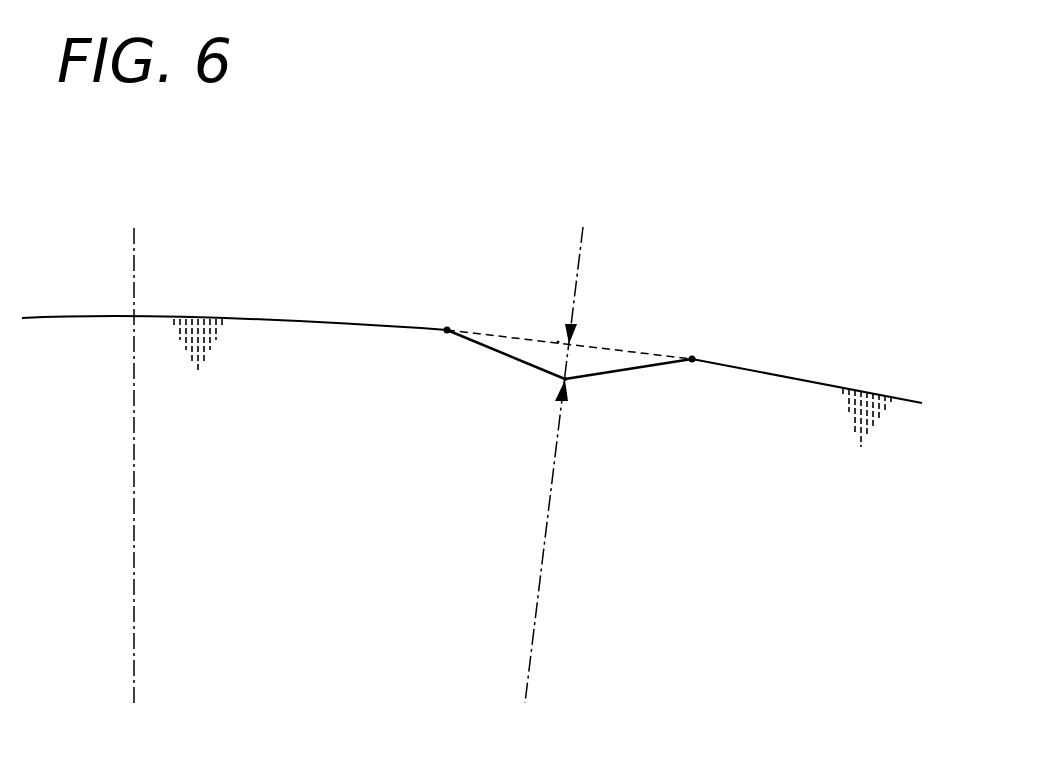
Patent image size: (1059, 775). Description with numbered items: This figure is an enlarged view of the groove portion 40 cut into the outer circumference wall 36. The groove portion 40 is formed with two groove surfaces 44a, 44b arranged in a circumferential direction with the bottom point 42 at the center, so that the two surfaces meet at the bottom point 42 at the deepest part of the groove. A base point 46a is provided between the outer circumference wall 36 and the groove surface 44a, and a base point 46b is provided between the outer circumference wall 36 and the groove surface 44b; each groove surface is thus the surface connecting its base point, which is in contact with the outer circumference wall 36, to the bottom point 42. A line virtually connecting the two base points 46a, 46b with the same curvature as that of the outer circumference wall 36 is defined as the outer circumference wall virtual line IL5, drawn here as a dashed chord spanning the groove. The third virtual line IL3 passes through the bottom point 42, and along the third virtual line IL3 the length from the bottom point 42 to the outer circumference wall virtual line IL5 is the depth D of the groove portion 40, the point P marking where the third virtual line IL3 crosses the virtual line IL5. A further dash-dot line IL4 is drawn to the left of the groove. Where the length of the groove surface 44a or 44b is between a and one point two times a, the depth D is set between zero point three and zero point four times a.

The outer circumference wall 36 is at (288, 318).
The groove portion 40 is at (508, 284).
The bottom point 42 is at (584, 398).
The groove surface 44a is at (512, 358).
The groove surface 44b is at (632, 368).
The base point 46a is at (447, 330).
The base point 46b is at (692, 357).
The depth D is at (568, 362).
The intersection point P is at (555, 324).
The third virtual line IL3 is at (533, 641).
The imaginary line 4 IL4 is at (134, 526).
The outer circumference wall virtual line IL5 is at (490, 333).